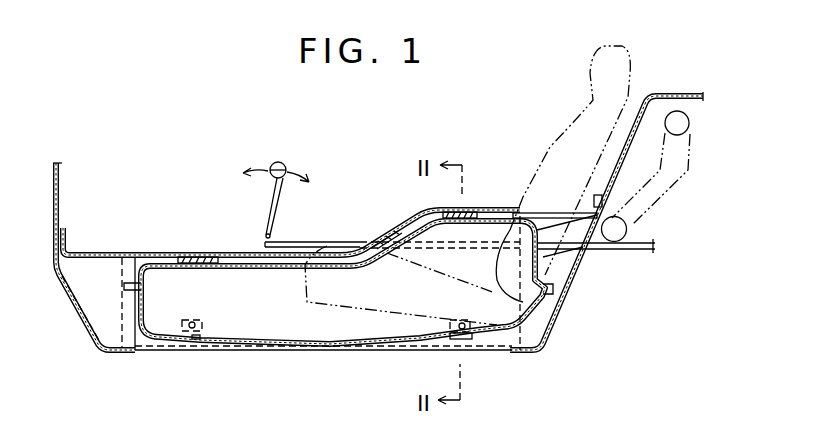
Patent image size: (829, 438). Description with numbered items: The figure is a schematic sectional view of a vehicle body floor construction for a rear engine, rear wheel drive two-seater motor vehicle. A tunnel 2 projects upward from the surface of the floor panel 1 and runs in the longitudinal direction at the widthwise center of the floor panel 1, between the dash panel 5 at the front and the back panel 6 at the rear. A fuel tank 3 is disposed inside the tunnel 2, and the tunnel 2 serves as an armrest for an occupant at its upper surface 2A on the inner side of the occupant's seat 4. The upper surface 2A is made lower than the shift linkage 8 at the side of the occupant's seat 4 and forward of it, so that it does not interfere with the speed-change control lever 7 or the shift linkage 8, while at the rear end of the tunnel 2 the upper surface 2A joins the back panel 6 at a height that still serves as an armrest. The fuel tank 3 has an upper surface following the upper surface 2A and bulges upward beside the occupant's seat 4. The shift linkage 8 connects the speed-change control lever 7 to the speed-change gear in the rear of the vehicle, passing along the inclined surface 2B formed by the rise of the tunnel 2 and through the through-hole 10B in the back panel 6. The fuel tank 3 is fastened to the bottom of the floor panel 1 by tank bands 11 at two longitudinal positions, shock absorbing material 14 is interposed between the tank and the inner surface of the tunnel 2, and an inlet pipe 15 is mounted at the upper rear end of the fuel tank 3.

The floor panel 1 is at (315, 349).
The tunnel 2 is at (230, 252).
The upper surface 2A is at (497, 207).
The inclined surface 2B is at (152, 252).
The fuel tank 3 is at (235, 342).
The occupant's seat 4 is at (562, 143).
The dash panel 5 is at (59, 187).
The back panel 6 is at (619, 167).
The speed-change control lever 7 is at (281, 161).
The shift linkage 8 is at (327, 242).
The through-hole 10B is at (583, 250).
The tank band 11 is at (463, 341).
The shock absorbing material 14 is at (470, 208).
The inlet pipe 15 is at (662, 202).